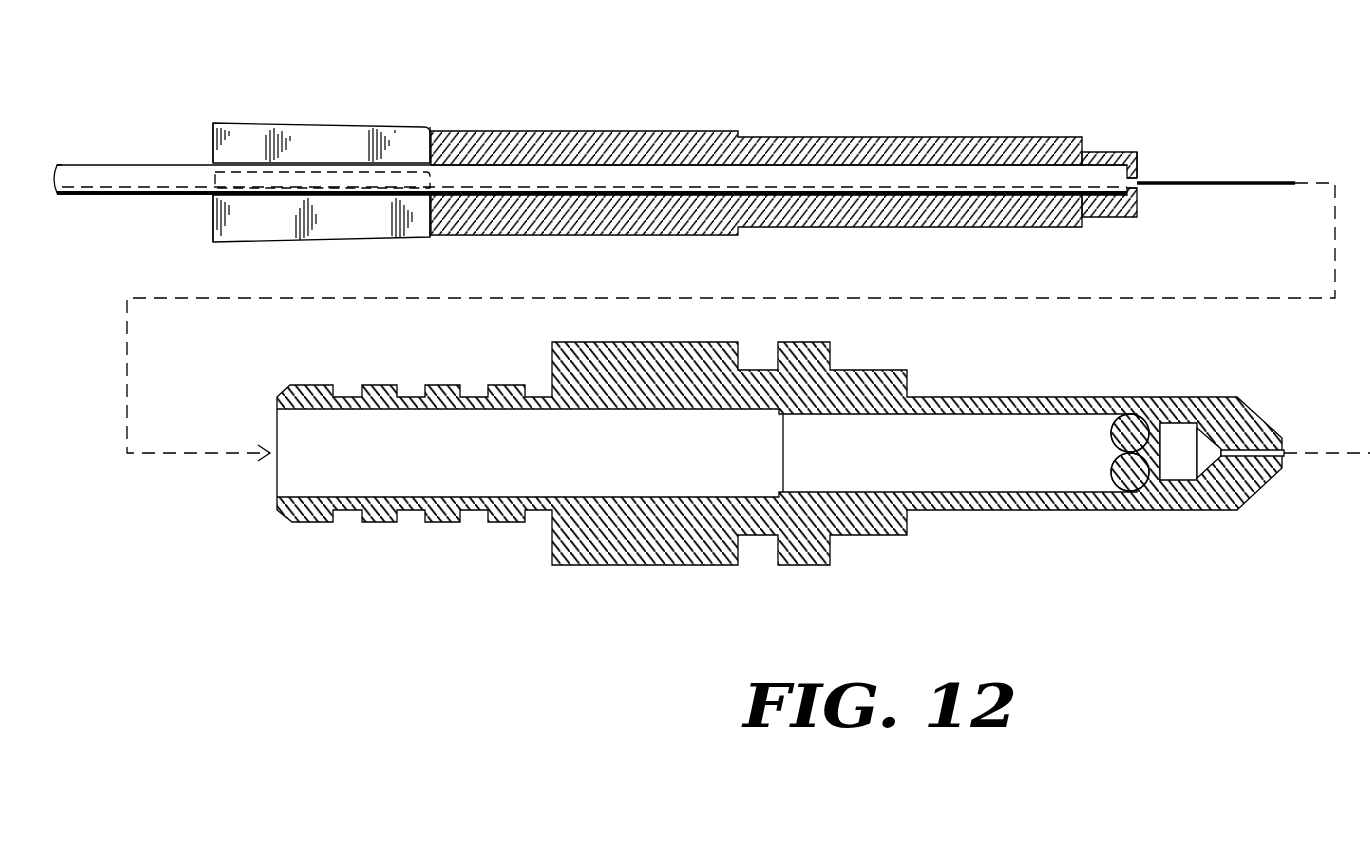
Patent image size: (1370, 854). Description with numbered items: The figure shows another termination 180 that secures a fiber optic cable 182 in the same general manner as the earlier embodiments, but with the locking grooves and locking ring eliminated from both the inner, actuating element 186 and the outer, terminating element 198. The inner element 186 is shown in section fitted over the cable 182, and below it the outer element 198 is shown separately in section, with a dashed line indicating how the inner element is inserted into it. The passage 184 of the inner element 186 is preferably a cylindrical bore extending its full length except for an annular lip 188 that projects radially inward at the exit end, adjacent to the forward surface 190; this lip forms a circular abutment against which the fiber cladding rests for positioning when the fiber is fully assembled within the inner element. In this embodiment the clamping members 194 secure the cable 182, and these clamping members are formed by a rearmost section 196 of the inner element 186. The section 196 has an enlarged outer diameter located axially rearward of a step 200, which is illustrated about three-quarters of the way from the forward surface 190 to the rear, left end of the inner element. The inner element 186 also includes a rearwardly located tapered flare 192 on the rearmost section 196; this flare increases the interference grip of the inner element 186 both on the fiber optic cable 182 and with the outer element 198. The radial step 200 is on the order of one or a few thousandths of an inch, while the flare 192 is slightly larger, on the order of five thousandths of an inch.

The termination 180 is at (694, 245).
The fiber optic cable 182 is at (108, 176).
The passage 184 is at (1096, 152).
The inner, actuating element 186 is at (944, 126).
The annular lip 188 is at (1140, 197).
The forward surface 190 is at (1138, 162).
The tapered flare 192 is at (214, 123).
The clamping members 194 is at (212, 150).
The rearmost section 196 is at (326, 108).
The outer, terminating element 198 is at (1035, 518).
The step 200 is at (431, 131).